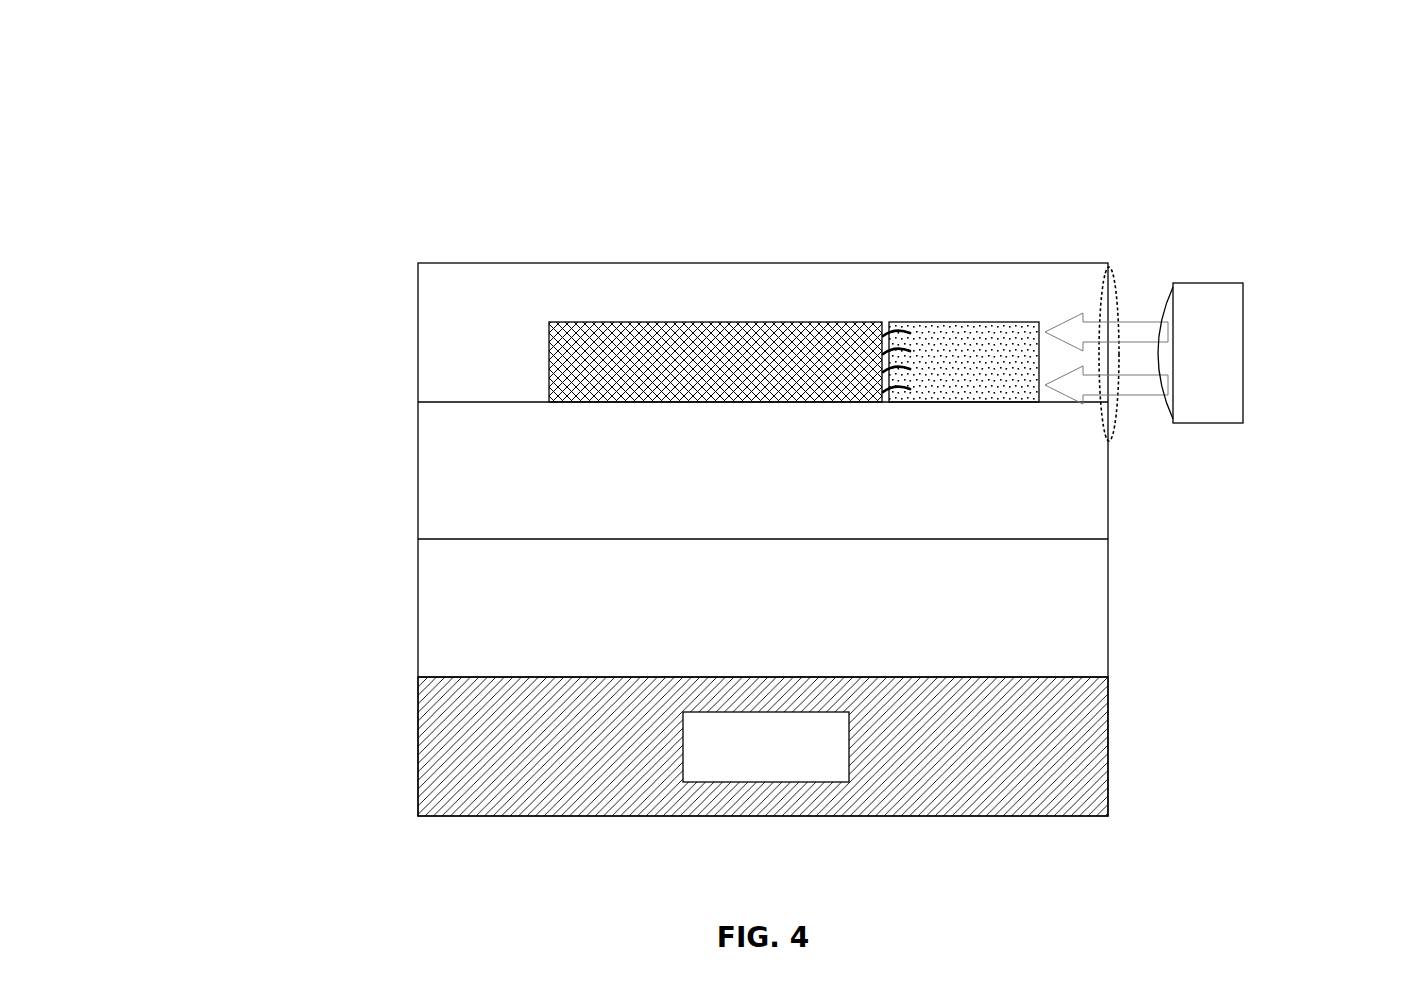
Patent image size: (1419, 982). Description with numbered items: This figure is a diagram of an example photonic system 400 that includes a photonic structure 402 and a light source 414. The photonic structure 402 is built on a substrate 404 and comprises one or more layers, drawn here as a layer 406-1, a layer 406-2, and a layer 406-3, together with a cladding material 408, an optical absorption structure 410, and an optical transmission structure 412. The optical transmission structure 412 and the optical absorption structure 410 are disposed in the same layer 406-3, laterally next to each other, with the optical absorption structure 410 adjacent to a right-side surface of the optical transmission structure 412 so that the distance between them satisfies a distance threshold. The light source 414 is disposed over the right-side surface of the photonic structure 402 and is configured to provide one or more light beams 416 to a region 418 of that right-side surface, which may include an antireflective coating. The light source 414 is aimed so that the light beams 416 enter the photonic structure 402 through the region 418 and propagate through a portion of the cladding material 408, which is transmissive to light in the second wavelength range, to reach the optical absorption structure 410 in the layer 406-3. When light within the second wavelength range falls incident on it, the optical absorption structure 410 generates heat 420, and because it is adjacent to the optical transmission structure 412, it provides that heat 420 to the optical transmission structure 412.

The photonic system 400 is at (280, 57).
The photonic structure 402 is at (385, 245).
The substrate 404 is at (749, 772).
The layer 406-1 is at (399, 620).
The layer 406-2 is at (399, 472).
The layer 406-3 is at (399, 332).
The cladding material 408 is at (477, 583).
The optical absorption structure 410 is at (931, 343).
The optical transmission structure 412 is at (696, 363).
The light source 414 is at (1202, 356).
The light beams 416 is at (1123, 376).
The region 418 is at (1104, 271).
The heat 420 is at (890, 397).